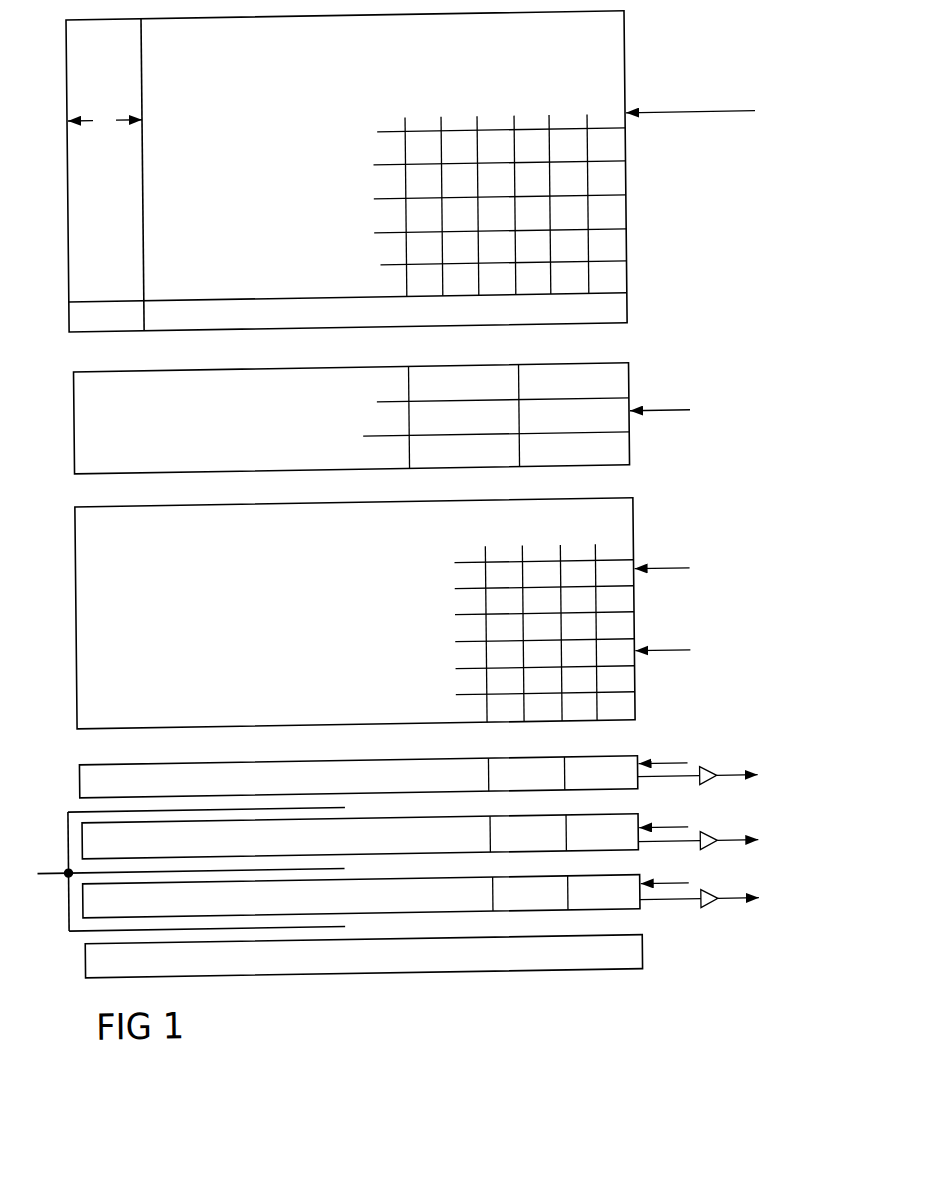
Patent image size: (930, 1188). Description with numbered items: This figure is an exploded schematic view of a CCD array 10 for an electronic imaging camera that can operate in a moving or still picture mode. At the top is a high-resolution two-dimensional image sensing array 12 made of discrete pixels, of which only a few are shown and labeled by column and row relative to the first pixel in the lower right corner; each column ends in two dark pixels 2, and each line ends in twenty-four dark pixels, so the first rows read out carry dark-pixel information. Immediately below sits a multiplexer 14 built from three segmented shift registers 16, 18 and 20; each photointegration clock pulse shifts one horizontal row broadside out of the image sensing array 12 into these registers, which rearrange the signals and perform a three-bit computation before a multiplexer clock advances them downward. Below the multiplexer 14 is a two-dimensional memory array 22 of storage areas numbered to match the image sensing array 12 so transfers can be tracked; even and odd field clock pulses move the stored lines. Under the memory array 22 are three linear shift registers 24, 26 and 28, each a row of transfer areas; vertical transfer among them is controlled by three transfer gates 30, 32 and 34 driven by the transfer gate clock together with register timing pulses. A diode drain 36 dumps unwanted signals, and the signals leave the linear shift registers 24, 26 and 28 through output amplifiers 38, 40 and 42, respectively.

The dark pixels 2 is at (208, 364).
The CCD array 10 is at (692, 382).
The image sensing array 12 is at (626, 73).
The multiplexer 14 is at (595, 364).
The segmented shift register 16 is at (625, 387).
The segmented shift register 18 is at (626, 433).
The segmented shift register 20 is at (626, 460).
The memory array 22 is at (549, 505).
The linear shift register 24 is at (449, 763).
The linear shift register 26 is at (431, 821).
The linear shift register 28 is at (420, 884).
The transfer gate 30 is at (337, 812).
The transfer gate 32 is at (336, 873).
The transfer gate 34 is at (336, 931).
The diode drain 36 is at (614, 943).
The output amplifier 38 is at (699, 779).
The output amplifier 40 is at (699, 843).
The output amplifier 42 is at (699, 901).